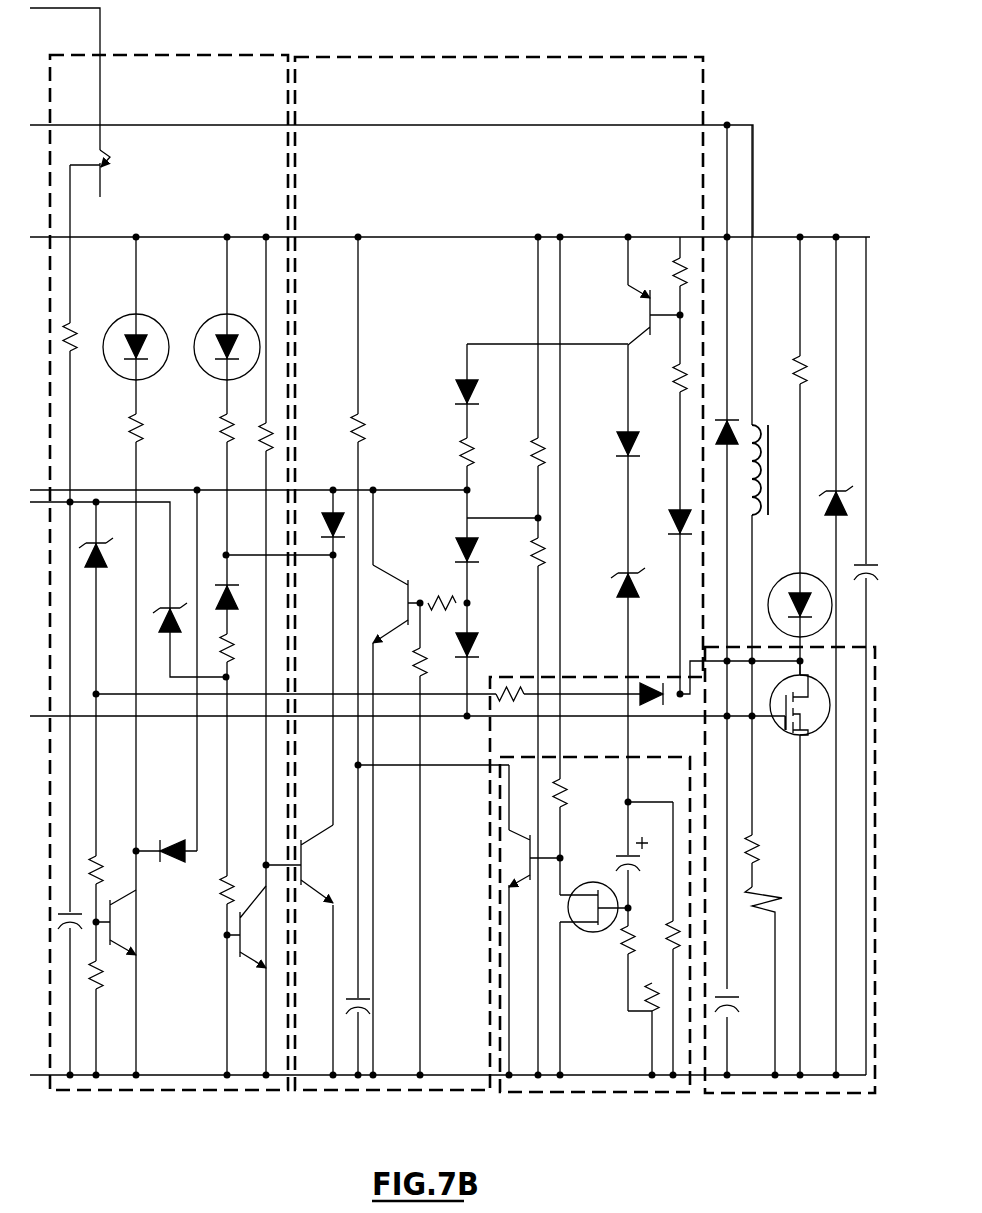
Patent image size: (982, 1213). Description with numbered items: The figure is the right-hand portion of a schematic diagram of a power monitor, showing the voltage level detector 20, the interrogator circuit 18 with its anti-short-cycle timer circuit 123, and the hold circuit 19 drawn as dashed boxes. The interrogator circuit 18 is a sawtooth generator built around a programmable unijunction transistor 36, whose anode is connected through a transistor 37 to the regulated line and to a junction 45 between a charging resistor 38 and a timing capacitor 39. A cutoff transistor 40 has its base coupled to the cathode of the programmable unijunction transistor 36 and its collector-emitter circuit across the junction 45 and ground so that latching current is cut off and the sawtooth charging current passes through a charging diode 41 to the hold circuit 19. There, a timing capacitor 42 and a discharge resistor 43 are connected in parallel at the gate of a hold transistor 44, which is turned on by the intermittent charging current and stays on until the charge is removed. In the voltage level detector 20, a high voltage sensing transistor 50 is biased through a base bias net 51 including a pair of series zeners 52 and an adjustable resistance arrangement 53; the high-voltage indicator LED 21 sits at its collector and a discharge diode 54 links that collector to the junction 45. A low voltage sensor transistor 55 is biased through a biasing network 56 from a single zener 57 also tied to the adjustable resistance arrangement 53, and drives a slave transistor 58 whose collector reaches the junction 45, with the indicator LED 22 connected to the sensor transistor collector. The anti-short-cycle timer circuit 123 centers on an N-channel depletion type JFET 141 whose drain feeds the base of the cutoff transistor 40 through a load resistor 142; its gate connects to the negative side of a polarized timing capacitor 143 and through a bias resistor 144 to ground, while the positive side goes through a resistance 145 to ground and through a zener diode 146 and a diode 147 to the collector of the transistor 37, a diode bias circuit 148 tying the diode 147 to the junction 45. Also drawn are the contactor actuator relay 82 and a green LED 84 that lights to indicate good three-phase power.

The interrogator circuit 18 is at (408, 57).
The hold circuit 19 is at (835, 1093).
The voltage level detector 20 is at (208, 56).
The high-voltage indicator LED 21 is at (128, 318).
The indicator LED 22 is at (213, 318).
The programmable unijunction transistor 36 is at (458, 540).
The transistor 37 is at (636, 296).
The charging resistor 38 is at (362, 425).
The timing capacitor 39 is at (365, 1000).
The cutoff transistor 40 is at (388, 572).
The charging diode 41 is at (472, 632).
The timing capacitor 42 is at (730, 1002).
The discharge resistor 43 is at (768, 890).
The hold transistor 44 is at (772, 695).
The junction 45 is at (368, 488).
The high voltage sensing transistor 50 is at (116, 934).
The base bias net 51 is at (100, 862).
The series zeners 52 is at (102, 568).
The adjustable resistance arrangement 53 is at (113, 170).
The discharge diode 54 is at (172, 845).
The low voltage sensor transistor 55 is at (236, 952).
The biasing network 56 is at (220, 888).
The zener 57 is at (160, 610).
The slave transistor 58 is at (312, 880).
The contactor actuator relay 82 is at (760, 430).
The green LED 84 is at (785, 578).
The anti-short-cycle timer circuit 123 is at (560, 1092).
The N-channel depletion type JFET 141 is at (580, 930).
The load resistor 142 is at (568, 790).
The polarized timing capacitor 143 is at (622, 854).
The bias resistor 144 is at (650, 1000).
The resistance 145 is at (672, 932).
The zener diode 146 is at (622, 596).
The diode 147 is at (620, 440).
The diode bias circuit 148 is at (460, 380).